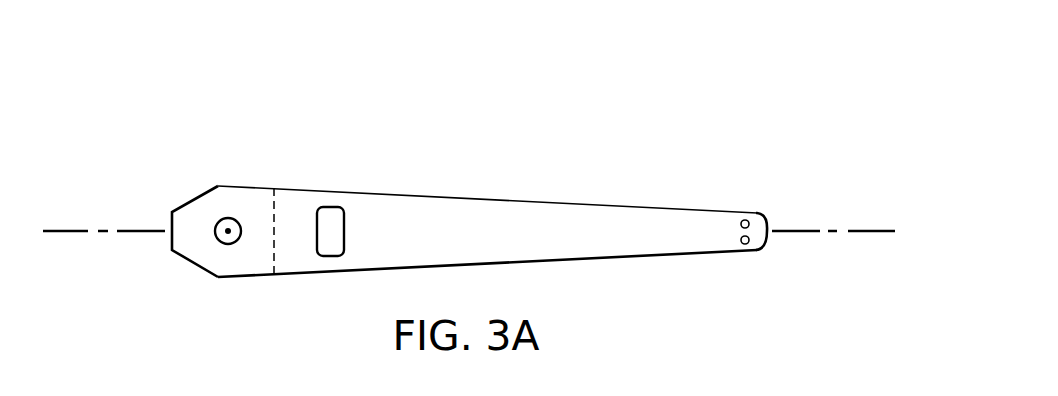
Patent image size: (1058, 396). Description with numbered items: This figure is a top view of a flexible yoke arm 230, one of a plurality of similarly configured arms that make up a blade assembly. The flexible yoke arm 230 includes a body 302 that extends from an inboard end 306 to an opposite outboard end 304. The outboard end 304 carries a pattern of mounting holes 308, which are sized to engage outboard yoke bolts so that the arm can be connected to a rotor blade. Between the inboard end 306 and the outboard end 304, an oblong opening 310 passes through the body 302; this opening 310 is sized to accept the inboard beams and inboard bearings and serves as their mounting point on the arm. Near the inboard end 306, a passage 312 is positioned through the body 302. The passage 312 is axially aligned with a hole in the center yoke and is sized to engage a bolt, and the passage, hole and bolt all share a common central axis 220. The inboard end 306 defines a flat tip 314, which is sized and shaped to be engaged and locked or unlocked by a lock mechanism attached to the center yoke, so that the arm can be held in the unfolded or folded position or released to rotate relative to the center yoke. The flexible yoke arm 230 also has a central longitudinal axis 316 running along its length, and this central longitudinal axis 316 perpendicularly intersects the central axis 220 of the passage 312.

The flexible yoke arm 230 is at (670, 72).
The body 302 is at (402, 205).
The outboard end 304 is at (702, 210).
The inboard end 306 is at (197, 197).
The mounting holes 308 is at (742, 245).
The oblong opening 310 is at (322, 230).
The passage 312 is at (229, 244).
The central axis 220 is at (220, 228).
The flat tip 314 is at (170, 238).
The central longitudinal axis 316 is at (870, 228).